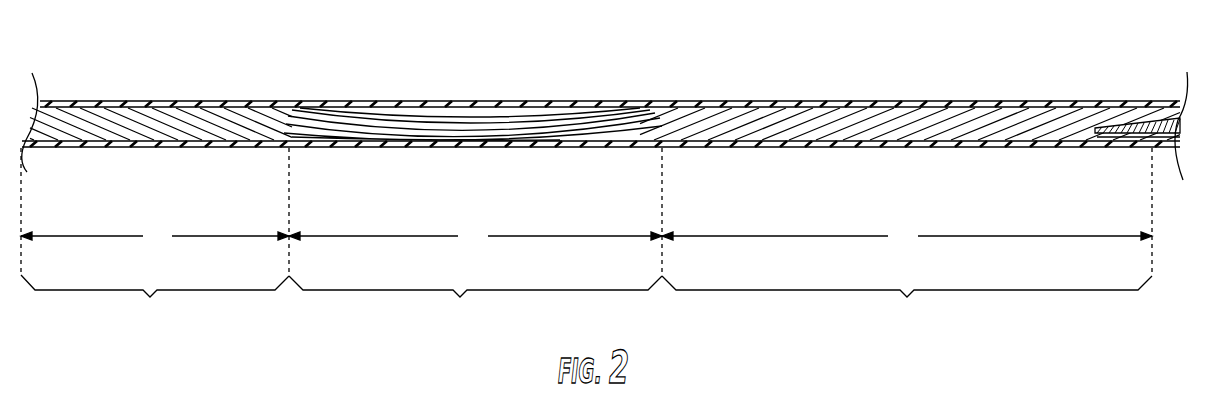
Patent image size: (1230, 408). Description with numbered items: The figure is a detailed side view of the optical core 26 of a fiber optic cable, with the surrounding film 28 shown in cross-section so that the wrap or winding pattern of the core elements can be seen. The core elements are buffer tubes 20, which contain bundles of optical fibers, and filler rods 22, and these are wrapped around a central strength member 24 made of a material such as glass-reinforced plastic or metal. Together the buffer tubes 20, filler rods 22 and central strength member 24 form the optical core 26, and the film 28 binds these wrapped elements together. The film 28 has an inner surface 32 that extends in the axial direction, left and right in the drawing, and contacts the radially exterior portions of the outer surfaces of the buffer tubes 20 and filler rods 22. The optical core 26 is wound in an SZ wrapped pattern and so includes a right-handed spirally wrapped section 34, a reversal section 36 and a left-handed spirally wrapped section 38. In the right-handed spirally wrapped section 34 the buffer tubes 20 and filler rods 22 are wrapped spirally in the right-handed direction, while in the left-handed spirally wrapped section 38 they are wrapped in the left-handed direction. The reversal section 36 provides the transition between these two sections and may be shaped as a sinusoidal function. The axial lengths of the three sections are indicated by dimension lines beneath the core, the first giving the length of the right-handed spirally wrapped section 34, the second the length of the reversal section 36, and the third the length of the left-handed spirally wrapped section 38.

The buffer tubes 20 is at (1003, 127).
The filler rods 22 is at (1093, 128).
The central strength member 24 is at (1185, 122).
The optical core 26 is at (993, 73).
The film 28 is at (843, 103).
The inner surface 32 is at (748, 107).
The right-handed spirally wrapped section 34 is at (151, 297).
The reversal section 36 is at (461, 297).
The left-handed spirally wrapped section 38 is at (908, 297).